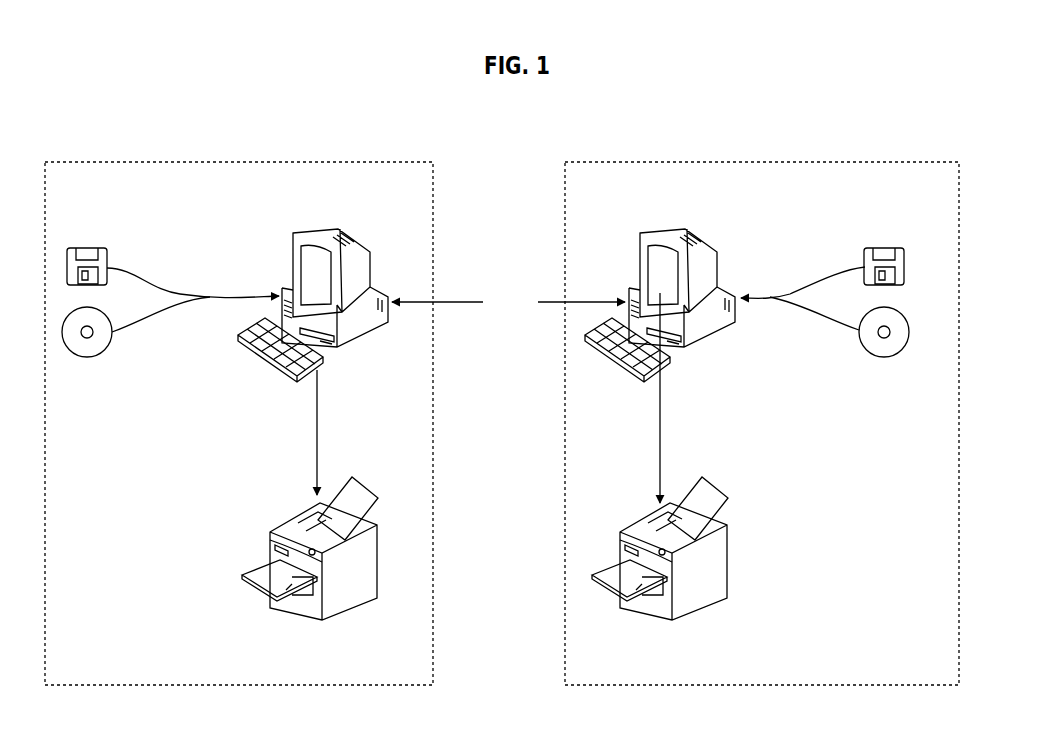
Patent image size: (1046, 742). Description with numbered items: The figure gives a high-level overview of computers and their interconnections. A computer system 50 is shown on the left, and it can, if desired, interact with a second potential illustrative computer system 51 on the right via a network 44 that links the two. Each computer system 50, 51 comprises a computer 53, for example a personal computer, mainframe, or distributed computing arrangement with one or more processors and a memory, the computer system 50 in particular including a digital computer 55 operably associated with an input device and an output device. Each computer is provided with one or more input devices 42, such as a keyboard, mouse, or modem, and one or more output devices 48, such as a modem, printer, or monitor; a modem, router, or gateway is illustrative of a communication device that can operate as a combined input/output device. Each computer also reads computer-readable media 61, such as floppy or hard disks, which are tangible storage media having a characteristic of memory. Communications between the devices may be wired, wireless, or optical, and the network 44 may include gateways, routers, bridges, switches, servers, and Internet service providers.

The computer system 50 is at (239, 423).
The computer system 51 is at (762, 423).
The digital computer 55 is at (289, 258).
The computer 53 is at (725, 270).
The network 44 is at (508, 304).
The output device 48 is at (340, 226).
The input device 42 is at (615, 302).
The media 61 is at (62, 264).